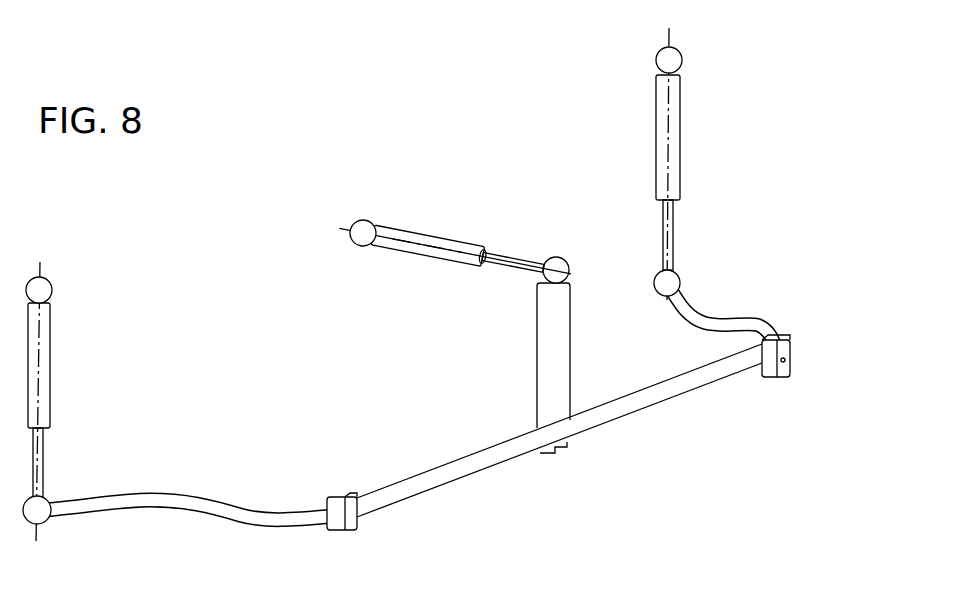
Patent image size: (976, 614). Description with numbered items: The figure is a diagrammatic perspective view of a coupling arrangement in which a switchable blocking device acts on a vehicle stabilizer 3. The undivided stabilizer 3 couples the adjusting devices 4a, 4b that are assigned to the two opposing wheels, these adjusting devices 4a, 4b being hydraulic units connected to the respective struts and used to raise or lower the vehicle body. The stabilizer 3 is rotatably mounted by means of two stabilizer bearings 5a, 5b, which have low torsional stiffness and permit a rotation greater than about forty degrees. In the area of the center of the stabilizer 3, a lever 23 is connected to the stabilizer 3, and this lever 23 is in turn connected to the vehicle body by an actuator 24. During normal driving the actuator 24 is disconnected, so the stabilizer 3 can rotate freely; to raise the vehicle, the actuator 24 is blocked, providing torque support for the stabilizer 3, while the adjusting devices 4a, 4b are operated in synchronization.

The stabilizer 3 is at (500, 459).
The adjusting device 4a is at (45, 393).
The adjusting device 4b is at (677, 116).
The stabilizer bearing 5a is at (357, 528).
The stabilizer bearing 5b is at (790, 368).
The lever 23 is at (556, 376).
The actuator 24 is at (414, 234).